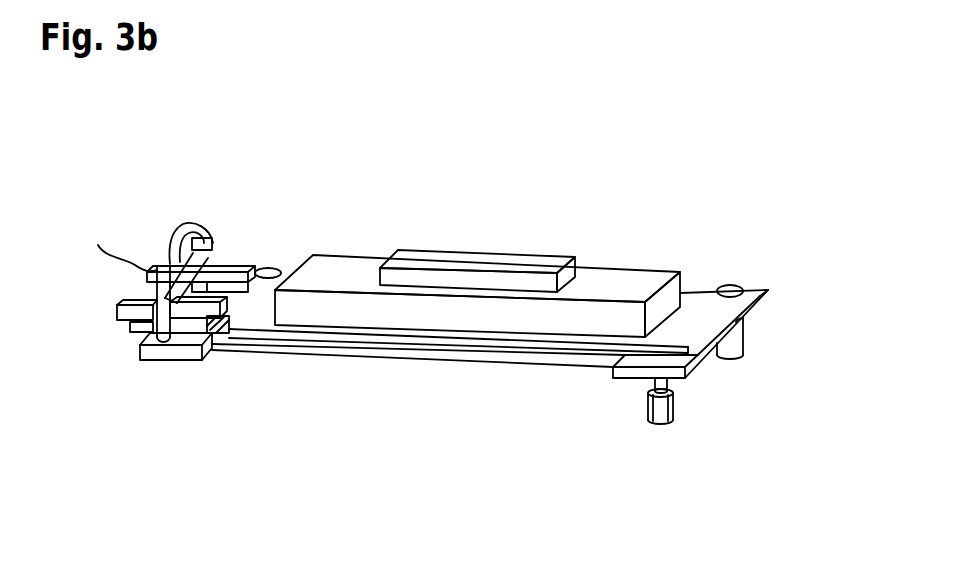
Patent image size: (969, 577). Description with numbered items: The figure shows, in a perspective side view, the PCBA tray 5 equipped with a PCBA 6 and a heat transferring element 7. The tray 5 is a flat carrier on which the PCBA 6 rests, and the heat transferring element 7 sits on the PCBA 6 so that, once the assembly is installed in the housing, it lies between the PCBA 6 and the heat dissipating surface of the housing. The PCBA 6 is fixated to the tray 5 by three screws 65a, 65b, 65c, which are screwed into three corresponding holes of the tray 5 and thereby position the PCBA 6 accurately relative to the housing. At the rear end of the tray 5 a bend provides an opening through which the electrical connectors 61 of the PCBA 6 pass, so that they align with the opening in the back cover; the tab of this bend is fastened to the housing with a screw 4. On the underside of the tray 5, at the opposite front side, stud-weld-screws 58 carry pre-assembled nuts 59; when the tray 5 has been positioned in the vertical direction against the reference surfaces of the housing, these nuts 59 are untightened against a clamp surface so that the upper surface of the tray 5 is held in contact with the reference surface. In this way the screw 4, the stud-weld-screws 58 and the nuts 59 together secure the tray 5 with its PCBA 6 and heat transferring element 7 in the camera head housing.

The screw 4 is at (207, 238).
The PCBA tray 5 is at (168, 361).
The PCBA 6 is at (343, 273).
The heat transferring element 7 is at (455, 265).
The stud-weld-screws 58 is at (643, 385).
The nuts 59 is at (673, 408).
The electrical connectors 61 is at (137, 303).
The screw 65a is at (230, 345).
The screw 65b is at (265, 266).
The screw 65c is at (730, 284).